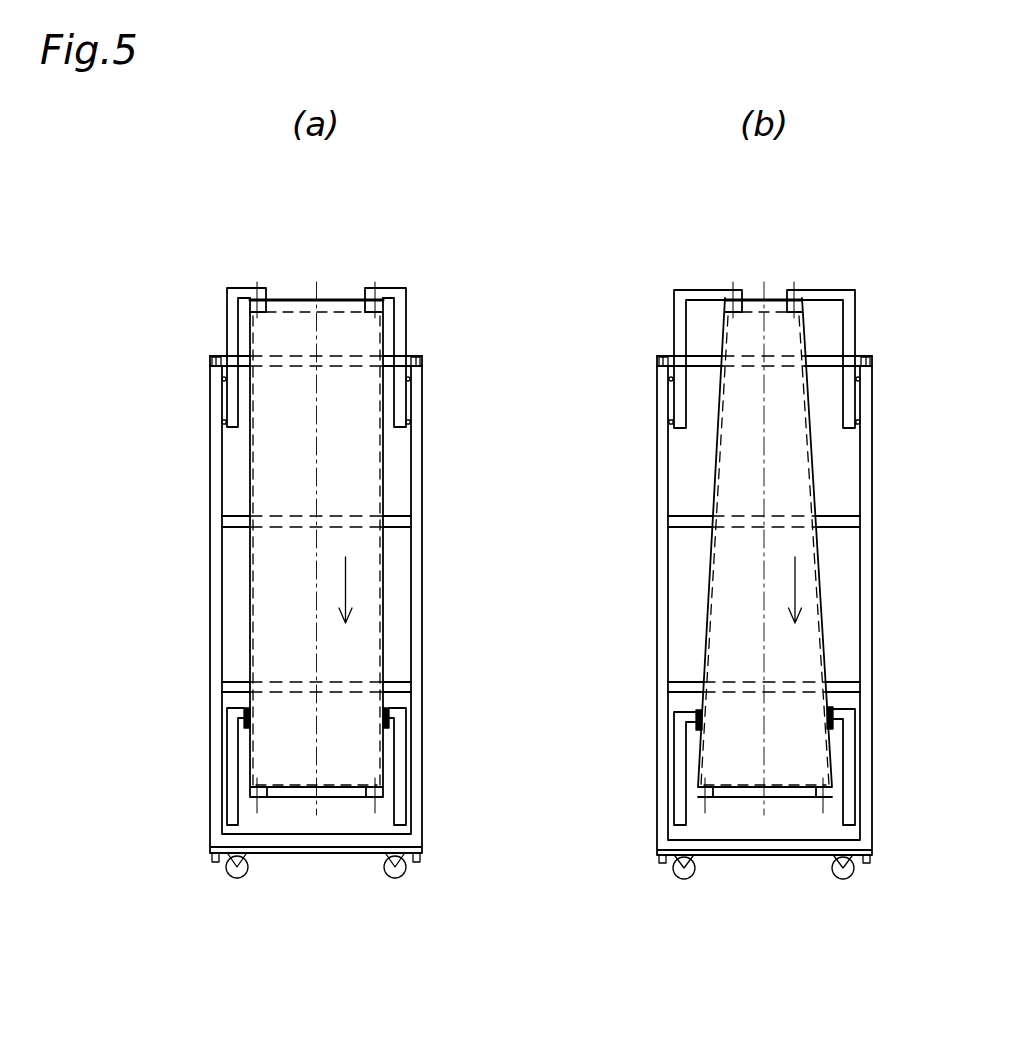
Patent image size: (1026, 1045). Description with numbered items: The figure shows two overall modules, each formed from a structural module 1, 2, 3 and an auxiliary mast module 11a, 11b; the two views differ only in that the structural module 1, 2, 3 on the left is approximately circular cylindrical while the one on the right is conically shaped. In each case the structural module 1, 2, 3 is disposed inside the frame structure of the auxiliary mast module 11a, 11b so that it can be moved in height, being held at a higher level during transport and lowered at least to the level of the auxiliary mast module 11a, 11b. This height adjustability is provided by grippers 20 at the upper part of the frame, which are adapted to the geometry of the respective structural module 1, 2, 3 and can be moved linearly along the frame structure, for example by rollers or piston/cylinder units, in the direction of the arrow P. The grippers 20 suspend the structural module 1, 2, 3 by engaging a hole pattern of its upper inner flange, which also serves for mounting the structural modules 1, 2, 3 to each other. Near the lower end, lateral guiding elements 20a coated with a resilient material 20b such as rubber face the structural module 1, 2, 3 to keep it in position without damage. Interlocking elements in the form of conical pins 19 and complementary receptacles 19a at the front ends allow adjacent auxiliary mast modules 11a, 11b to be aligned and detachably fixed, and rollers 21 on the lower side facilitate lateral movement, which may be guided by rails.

The structural module 1 is at (541, 548).
The structural module 2 is at (541, 548).
The structural module 3 is at (366, 474).
The auxiliary mast module 11a is at (541, 605).
The auxiliary mast module 11b is at (437, 641).
The conical pin 19 is at (212, 858).
The receptacle 19a is at (210, 362).
The gripper 20 is at (405, 320).
The lateral guiding element 20a is at (405, 750).
The resilient material 20b is at (403, 716).
The roller 21 is at (247, 874).
The arrow P is at (346, 585).